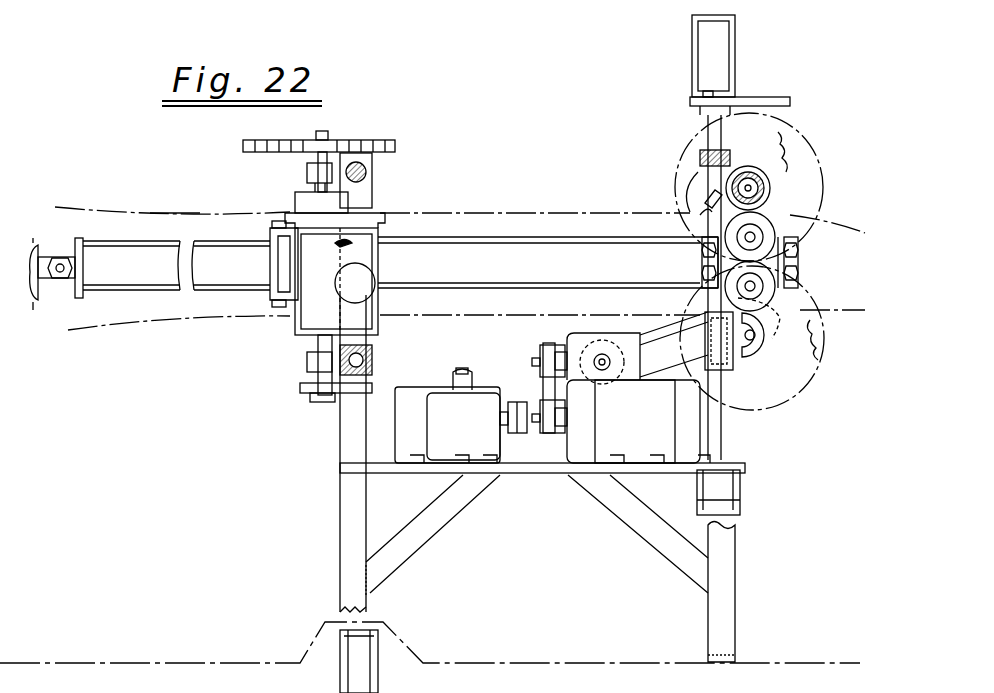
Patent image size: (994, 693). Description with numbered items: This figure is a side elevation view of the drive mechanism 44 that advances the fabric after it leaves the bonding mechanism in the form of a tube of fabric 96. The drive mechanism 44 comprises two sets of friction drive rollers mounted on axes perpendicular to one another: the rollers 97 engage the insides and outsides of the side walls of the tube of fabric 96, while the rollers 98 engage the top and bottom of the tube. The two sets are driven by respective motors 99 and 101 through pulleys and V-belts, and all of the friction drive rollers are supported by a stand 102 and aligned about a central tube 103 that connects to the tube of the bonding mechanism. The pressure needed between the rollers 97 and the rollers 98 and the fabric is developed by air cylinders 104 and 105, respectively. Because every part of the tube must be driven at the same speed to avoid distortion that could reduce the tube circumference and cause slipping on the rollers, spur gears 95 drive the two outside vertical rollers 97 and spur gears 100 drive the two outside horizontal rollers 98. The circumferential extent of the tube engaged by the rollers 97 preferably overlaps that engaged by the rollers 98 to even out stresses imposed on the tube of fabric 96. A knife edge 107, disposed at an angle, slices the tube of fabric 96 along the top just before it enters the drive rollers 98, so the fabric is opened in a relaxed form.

The drive mechanism 44 is at (538, 122).
The spur gears 95 is at (372, 142).
The tube of fabric 96 is at (173, 212).
The rollers 97 is at (379, 197).
The rollers 98 is at (775, 197).
The motor 99 is at (420, 417).
The spur gears 100 is at (778, 132).
The motor 101 is at (572, 440).
The stand 102 is at (345, 543).
The central tube 103 is at (150, 283).
The air cylinder 104 is at (380, 678).
The air cylinder 105 is at (735, 48).
The knife edge 107 is at (690, 212).